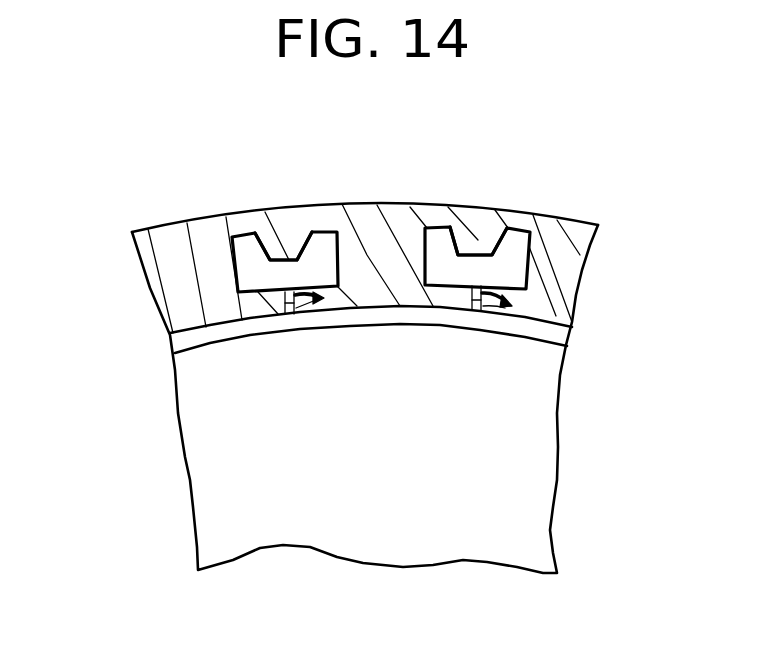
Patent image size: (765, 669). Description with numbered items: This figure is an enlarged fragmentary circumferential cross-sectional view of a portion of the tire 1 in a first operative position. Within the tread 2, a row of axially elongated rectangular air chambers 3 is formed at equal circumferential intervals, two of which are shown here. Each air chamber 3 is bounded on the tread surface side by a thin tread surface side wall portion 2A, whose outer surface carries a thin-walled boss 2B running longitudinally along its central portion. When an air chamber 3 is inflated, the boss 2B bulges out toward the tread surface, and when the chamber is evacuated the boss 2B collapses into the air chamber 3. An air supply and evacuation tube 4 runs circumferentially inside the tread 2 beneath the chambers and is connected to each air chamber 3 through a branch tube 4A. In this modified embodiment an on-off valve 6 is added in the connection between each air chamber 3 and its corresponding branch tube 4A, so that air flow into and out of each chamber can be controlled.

The tire 1 is at (184, 475).
The tread 2 is at (368, 222).
The tread surface side wall portion 2A is at (247, 233).
The boss 2B is at (478, 240).
The air chamber 3 is at (330, 232).
The air supply and evacuation tube 4 is at (432, 313).
The branch tube 4A is at (508, 311).
The on-off valve 6 is at (495, 255).